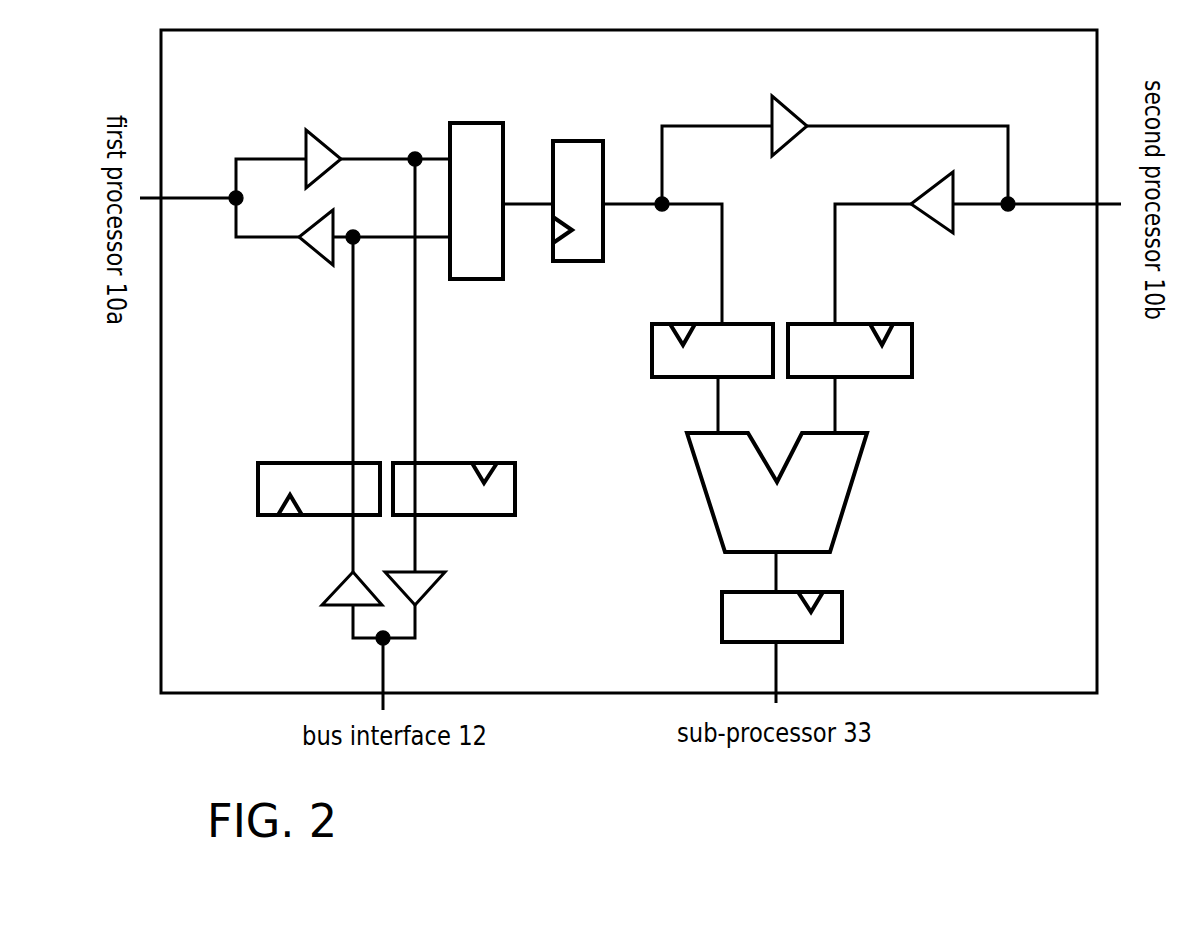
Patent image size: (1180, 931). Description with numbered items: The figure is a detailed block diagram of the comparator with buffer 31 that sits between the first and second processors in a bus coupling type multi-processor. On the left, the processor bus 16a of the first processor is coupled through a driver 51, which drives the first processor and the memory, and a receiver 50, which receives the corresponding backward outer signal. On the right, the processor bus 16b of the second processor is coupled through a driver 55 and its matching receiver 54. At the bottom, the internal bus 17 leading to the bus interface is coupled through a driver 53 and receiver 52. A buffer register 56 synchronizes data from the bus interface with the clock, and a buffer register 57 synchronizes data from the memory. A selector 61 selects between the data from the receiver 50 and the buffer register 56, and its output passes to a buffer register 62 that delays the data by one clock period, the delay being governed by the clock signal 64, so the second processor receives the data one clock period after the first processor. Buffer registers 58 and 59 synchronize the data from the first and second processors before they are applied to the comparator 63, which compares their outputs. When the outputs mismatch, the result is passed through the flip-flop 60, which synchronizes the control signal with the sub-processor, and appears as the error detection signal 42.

The processor bus 16a is at (172, 200).
The processor bus 16b is at (1082, 205).
The internal bus 17 is at (385, 680).
The comparator with buffer 31 is at (1097, 470).
The error detection signal 42 is at (777, 673).
The receiver 50 is at (320, 140).
The driver 51 is at (310, 247).
The receiver 52 is at (337, 585).
The driver 53 is at (430, 593).
The receiver 54 is at (930, 220).
The driver 55 is at (785, 114).
The buffer register 56 is at (312, 463).
The buffer register 57 is at (455, 463).
The buffer register 58 is at (652, 343).
The buffer register 59 is at (912, 350).
The flip-flop 60 is at (842, 594).
The selector 61 is at (475, 123).
The buffer register 62 is at (565, 141).
The comparator 63 is at (850, 498).
The clock signal 64 is at (552, 230).